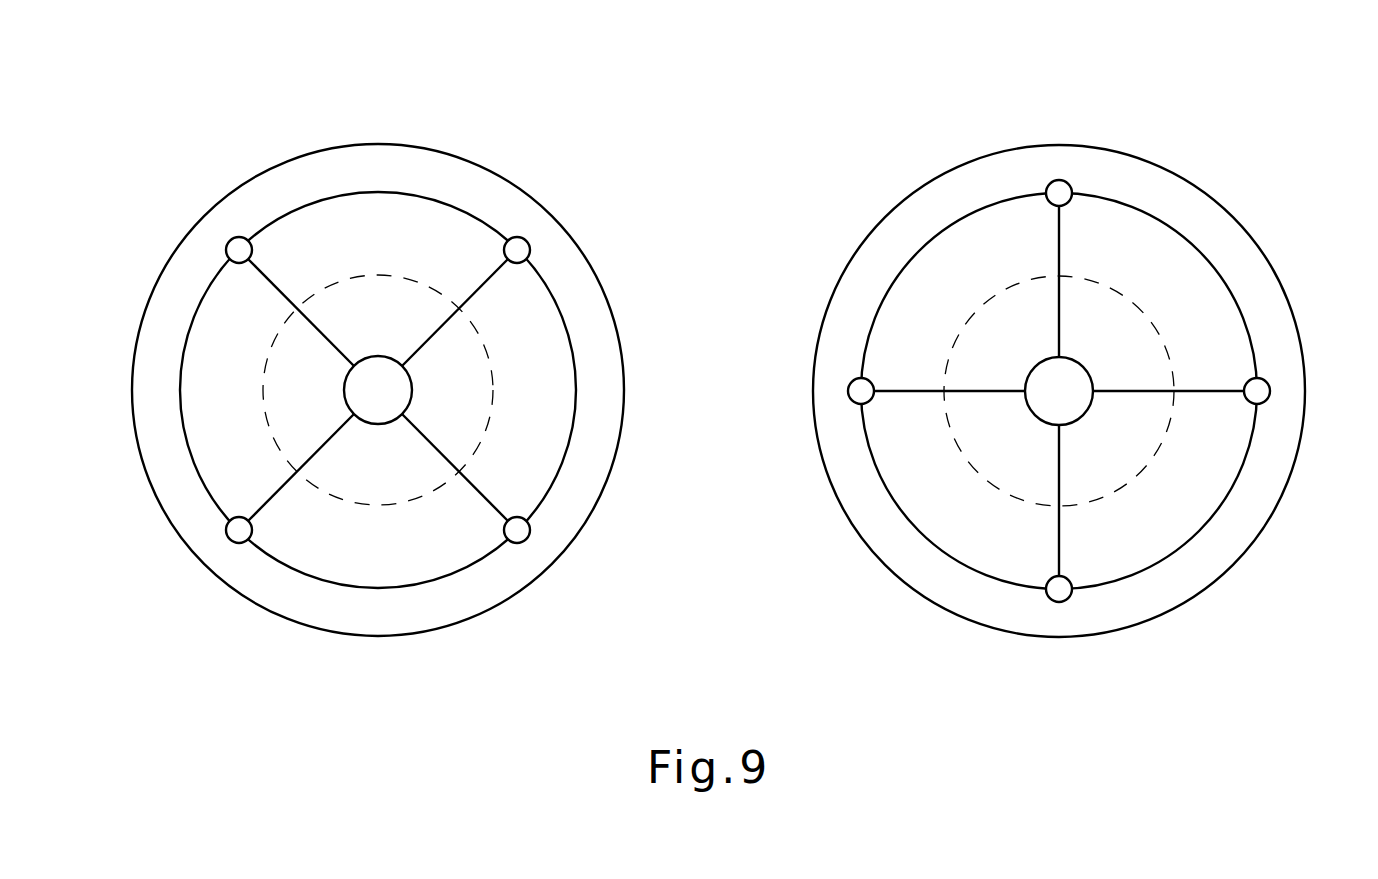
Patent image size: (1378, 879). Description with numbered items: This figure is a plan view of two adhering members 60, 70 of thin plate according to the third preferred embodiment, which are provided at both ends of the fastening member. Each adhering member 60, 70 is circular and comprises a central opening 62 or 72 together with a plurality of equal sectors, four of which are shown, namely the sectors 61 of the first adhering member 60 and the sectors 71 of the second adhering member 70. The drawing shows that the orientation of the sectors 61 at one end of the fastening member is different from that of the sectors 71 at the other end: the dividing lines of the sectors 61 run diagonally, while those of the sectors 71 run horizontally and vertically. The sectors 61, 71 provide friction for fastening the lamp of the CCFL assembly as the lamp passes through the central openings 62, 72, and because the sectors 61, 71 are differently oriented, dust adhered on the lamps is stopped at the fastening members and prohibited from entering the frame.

The adhering member 60 is at (404, 339).
The sectors 61 is at (388, 222).
The central opening 62 is at (485, 433).
The adhering member 70 is at (1089, 341).
The sectors 71 is at (1178, 293).
The central opening 72 is at (1167, 435).